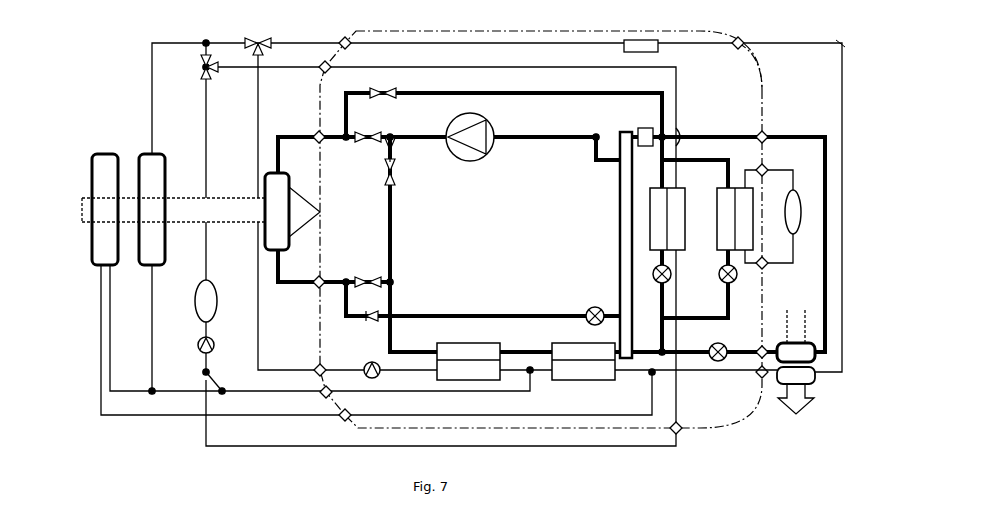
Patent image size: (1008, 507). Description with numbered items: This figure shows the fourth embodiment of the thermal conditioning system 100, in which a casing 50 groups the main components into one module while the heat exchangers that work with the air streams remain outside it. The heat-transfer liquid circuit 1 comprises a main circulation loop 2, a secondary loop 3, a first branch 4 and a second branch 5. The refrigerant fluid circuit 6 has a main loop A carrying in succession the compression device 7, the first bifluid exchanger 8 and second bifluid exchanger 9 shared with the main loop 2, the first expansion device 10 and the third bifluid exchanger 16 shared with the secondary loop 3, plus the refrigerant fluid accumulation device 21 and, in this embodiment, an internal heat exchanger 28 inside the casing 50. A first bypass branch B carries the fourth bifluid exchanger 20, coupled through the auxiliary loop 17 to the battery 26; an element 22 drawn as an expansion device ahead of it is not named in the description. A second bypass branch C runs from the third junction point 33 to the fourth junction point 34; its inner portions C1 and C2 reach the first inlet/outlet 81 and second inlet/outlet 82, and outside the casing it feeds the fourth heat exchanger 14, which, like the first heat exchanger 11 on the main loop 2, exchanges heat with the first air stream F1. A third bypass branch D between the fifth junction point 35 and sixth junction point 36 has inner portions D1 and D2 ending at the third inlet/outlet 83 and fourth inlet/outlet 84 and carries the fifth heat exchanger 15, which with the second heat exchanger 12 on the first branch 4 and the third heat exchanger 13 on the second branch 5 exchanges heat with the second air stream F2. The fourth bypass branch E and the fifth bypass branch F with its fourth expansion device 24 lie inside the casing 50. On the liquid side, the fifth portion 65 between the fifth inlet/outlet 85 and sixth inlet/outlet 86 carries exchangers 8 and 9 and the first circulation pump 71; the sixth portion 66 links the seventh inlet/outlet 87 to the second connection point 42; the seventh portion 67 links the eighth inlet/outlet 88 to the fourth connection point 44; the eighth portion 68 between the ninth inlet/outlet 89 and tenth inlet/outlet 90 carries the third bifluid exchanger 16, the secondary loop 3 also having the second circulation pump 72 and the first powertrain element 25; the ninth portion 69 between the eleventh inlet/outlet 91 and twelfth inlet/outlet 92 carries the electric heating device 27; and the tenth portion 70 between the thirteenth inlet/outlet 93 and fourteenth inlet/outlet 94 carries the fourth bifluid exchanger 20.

The heat-transfer liquid circuit 1 is at (842, 42).
The main circulation loop 2 is at (845, 105).
The secondary loop 3 is at (208, 112).
The first branch 4 is at (150, 90).
The second branch 5 is at (108, 330).
The refrigerant fluid circuit 6 is at (514, 143).
The compression device 7 is at (478, 162).
The first bifluid exchanger 8 is at (470, 350).
The second bifluid exchanger 9 is at (590, 348).
The first expansion device 10 is at (655, 268).
The first heat exchanger 11 is at (814, 388).
The second heat exchanger 12 is at (150, 165).
The third heat exchanger 13 is at (105, 178).
The fourth heat exchanger 14 is at (820, 374).
The fifth heat exchanger 15 is at (275, 170).
The third bifluid exchanger 16 is at (662, 222).
The auxiliary loop 17 is at (795, 254).
The fourth bifluid exchanger 20 is at (746, 222).
The refrigerant fluid accumulation device 21 is at (636, 130).
The expansion valve 22 is at (722, 266).
The fourth expansion device 24 is at (588, 308).
The first element of the electric powertrain 25 is at (200, 300).
The second element of the electric powertrain 26 is at (790, 226).
The electric heating device 27 is at (662, 50).
The internal heat exchanger 28 is at (618, 238).
The third junction point 33 is at (668, 350).
The fourth junction point 34 is at (680, 135).
The fifth junction point 35 is at (395, 134).
The sixth junction point 36 is at (396, 285).
The second connection point 42 is at (534, 374).
The fourth connection point 44 is at (650, 375).
The casing 50 is at (765, 88).
The fifth portion 65 is at (690, 374).
The sixth portion 66 is at (400, 393).
The seventh portion 67 is at (560, 415).
The eighth portion 68 is at (468, 68).
The ninth portion 69 is at (478, 45).
The tenth portion 70 is at (750, 266).
The first heat-transfer liquid circulation pump 71 is at (366, 364).
The second heat-transfer liquid circulation pump 72 is at (212, 340).
The first inlet/outlet 81 is at (766, 346).
The second inlet/outlet 82 is at (770, 132).
The third inlet/outlet 83 is at (314, 132).
The fourth inlet/outlet 84 is at (314, 287).
The fifth inlet/outlet 85 is at (762, 385).
The sixth inlet/outlet 86 is at (316, 364).
The seventh inlet/outlet 87 is at (320, 394).
The eighth inlet/outlet 88 is at (342, 420).
The ninth inlet/outlet 89 is at (318, 60).
The tenth inlet/outlet 90 is at (680, 434).
The eleventh inlet/outlet 91 is at (340, 38).
The twelfth inlet/outlet 92 is at (745, 40).
The thirteenth inlet/outlet 93 is at (768, 168).
The fourteenth inlet/outlet 94 is at (768, 266).
The thermal conditioning system 100 is at (434, 28).
The main loop A is at (396, 210).
The first bypass branch B is at (606, 162).
The second bypass branch C is at (845, 262).
The first portion C1 is at (738, 296).
The second portion C2 is at (718, 137).
The third portion D1 is at (328, 148).
The fourth portion D2 is at (322, 278).
The fourth bypass branch E is at (512, 95).
The fifth bypass branch F is at (470, 313).
The first air stream F1 is at (800, 392).
The second air stream F2 is at (80, 215).